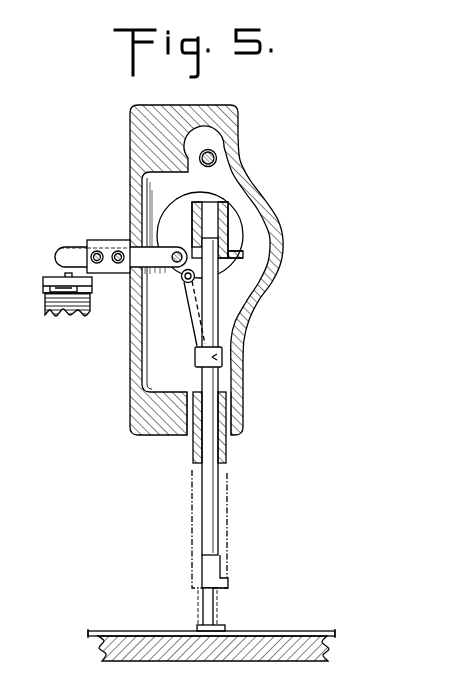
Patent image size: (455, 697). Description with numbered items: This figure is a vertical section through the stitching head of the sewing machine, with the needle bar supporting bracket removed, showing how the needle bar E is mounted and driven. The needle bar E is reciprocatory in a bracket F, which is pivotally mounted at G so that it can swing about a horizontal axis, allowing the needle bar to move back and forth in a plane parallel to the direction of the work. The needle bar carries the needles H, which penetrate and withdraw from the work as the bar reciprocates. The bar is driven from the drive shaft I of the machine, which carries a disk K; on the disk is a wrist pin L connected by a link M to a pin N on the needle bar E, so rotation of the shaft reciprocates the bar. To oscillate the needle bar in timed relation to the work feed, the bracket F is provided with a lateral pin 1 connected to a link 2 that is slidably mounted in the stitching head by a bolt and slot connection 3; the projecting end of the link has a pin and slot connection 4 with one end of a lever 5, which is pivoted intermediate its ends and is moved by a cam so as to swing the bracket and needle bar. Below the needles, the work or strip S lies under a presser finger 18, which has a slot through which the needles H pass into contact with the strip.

The pivot G is at (217, 160).
The disk K is at (240, 241).
The drive shaft I is at (188, 242).
The needle bar E is at (221, 505).
The bracket F is at (229, 452).
The pin N is at (214, 357).
The link 2 is at (132, 246).
The bolt and slot connection 3 is at (106, 240).
The lateral pin 1 is at (175, 260).
The pin and slot connection 4 is at (62, 290).
The lever 5 is at (63, 311).
The wrist pin L is at (182, 279).
The link M is at (194, 318).
The needles H is at (214, 608).
The presser finger 18 is at (198, 625).
The strip S is at (308, 633).